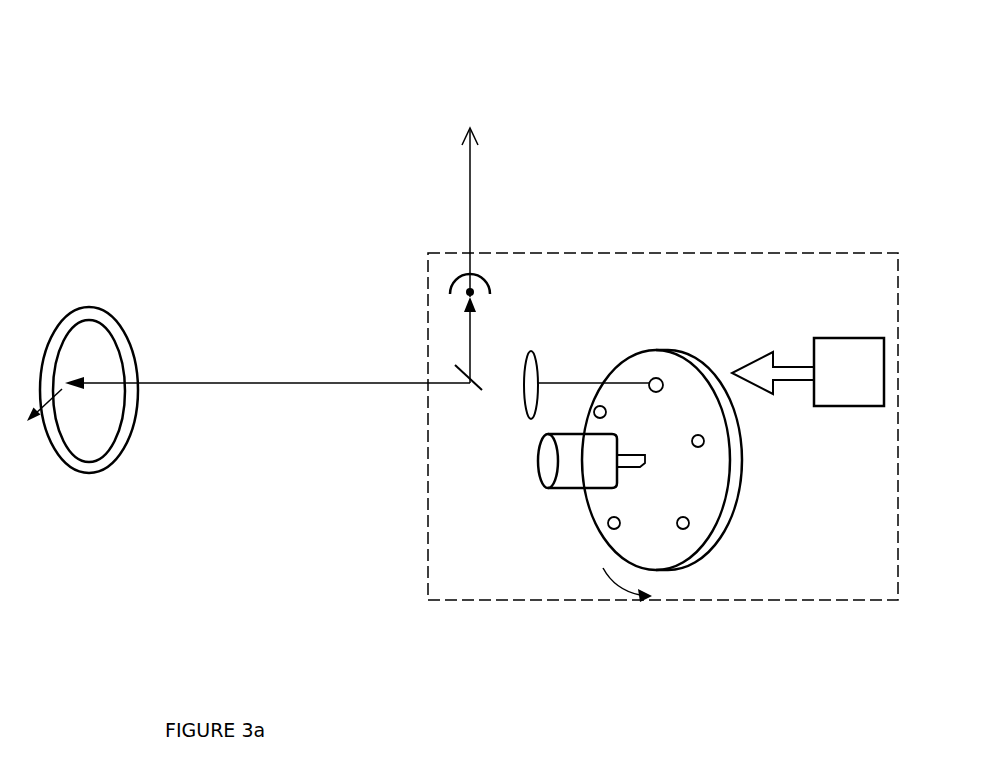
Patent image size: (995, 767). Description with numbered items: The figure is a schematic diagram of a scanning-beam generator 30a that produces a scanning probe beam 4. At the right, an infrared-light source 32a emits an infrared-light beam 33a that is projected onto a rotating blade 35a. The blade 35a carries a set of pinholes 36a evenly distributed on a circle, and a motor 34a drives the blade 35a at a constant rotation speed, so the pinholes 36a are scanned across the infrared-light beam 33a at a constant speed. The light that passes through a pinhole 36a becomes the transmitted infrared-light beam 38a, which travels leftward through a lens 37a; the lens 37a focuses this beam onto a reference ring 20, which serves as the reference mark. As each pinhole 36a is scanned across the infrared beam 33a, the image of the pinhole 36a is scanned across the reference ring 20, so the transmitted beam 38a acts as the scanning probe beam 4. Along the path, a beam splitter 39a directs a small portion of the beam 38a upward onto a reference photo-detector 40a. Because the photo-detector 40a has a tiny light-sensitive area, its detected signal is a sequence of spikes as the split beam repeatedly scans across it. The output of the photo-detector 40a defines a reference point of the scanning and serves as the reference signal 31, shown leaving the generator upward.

The scanning-beam generator 30a is at (228, 106).
The reference signal 31 is at (470, 183).
The reference photo-detector 40a is at (495, 296).
The beam splitter 39a is at (483, 392).
The lens 37a is at (523, 412).
The transmitted infrared-light beam 38a is at (577, 380).
The scanning probe beam 4 is at (233, 378).
The reference ring 20 is at (110, 458).
The infrared-light source 32a is at (866, 338).
The infrared-light beam 33a is at (800, 363).
The rotating blade 35a is at (737, 463).
The pinholes 36a is at (690, 523).
The motor 34a is at (562, 492).